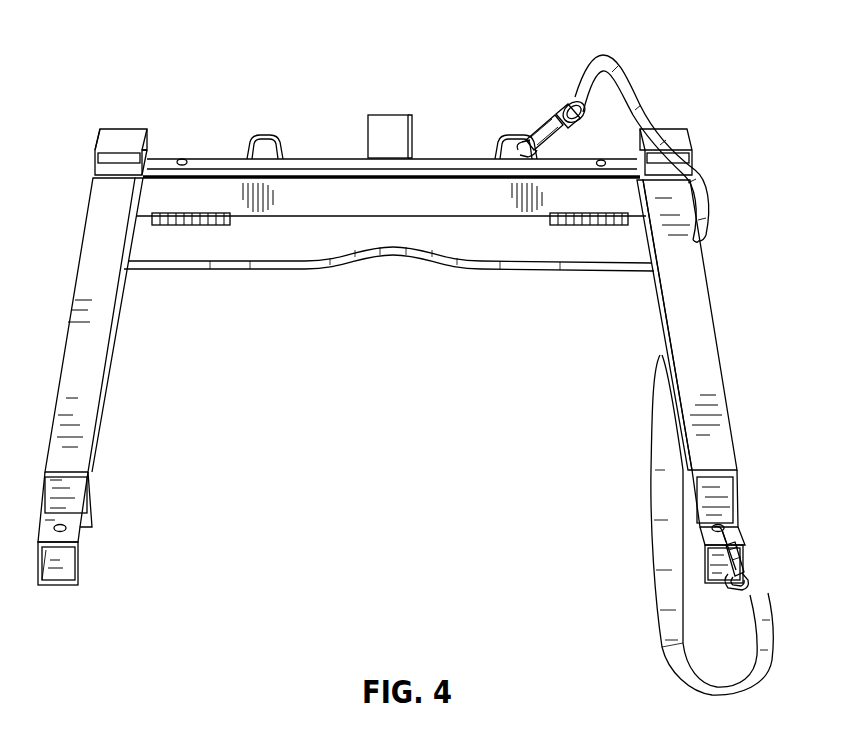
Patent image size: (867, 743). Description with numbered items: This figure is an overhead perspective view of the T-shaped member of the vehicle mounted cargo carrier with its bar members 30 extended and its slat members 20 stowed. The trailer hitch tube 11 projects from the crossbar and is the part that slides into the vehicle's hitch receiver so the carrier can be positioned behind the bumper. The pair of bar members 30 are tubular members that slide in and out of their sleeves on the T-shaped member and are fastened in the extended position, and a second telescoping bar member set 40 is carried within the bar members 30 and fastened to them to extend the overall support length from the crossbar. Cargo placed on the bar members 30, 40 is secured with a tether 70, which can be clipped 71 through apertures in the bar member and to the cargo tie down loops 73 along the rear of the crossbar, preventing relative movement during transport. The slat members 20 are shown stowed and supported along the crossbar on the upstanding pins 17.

The trailer hitch tube 11 is at (393, 114).
The upstanding pins 17 is at (185, 159).
The slat members 20 is at (318, 165).
The bar members 30 is at (708, 378).
The second telescoping bar member set 40 is at (726, 500).
The tether 70 is at (755, 633).
The clip 71 is at (547, 103).
The cargo tie down loops 73 is at (263, 134).